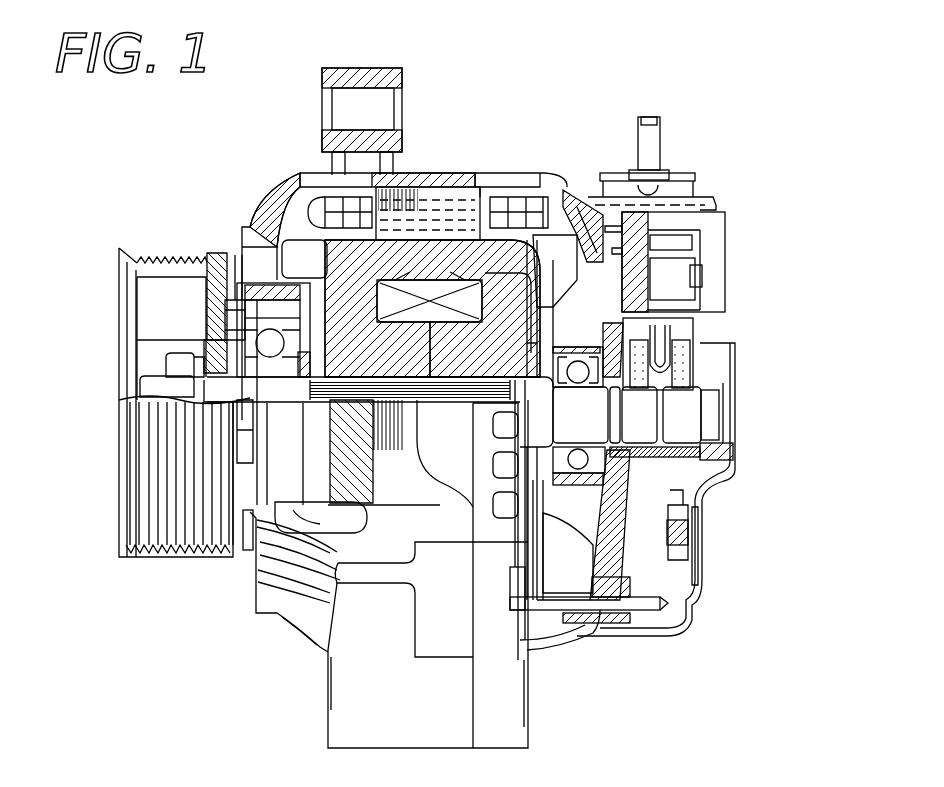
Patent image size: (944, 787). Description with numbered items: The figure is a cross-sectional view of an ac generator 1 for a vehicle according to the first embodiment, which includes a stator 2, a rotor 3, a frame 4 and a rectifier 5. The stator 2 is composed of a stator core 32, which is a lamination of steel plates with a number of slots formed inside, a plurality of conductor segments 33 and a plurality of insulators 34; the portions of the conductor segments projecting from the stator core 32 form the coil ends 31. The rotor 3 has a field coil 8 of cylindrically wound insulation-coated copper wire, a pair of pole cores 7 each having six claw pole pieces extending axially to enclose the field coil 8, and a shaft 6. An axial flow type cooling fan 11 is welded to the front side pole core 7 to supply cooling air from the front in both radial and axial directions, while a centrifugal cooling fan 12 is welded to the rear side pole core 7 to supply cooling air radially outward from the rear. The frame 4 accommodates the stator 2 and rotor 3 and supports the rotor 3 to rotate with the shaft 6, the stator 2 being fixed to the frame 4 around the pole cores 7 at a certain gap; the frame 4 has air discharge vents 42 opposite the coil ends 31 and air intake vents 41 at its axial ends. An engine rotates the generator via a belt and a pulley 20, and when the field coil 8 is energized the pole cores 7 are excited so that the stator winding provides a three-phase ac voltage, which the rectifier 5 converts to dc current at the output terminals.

The ac generator 1 is at (572, 56).
The stator 2 is at (547, 186).
The rotor 3 is at (279, 229).
The frame 4 is at (430, 290).
The rectifier 5 is at (668, 522).
The shaft 6 is at (207, 340).
The pole cores 7 is at (560, 200).
The field coil 8 is at (452, 280).
The axial flow type cooling fan 11 is at (287, 268).
The centrifugal cooling fan 12 is at (630, 282).
The pulley 20 is at (155, 258).
The coil ends 31 is at (316, 187).
The stator core 32 is at (418, 190).
The conductor segments 33 is at (513, 195).
The insulators 34 is at (488, 195).
The air intake vents 41 is at (247, 267).
The air discharge vents 42 is at (288, 185).